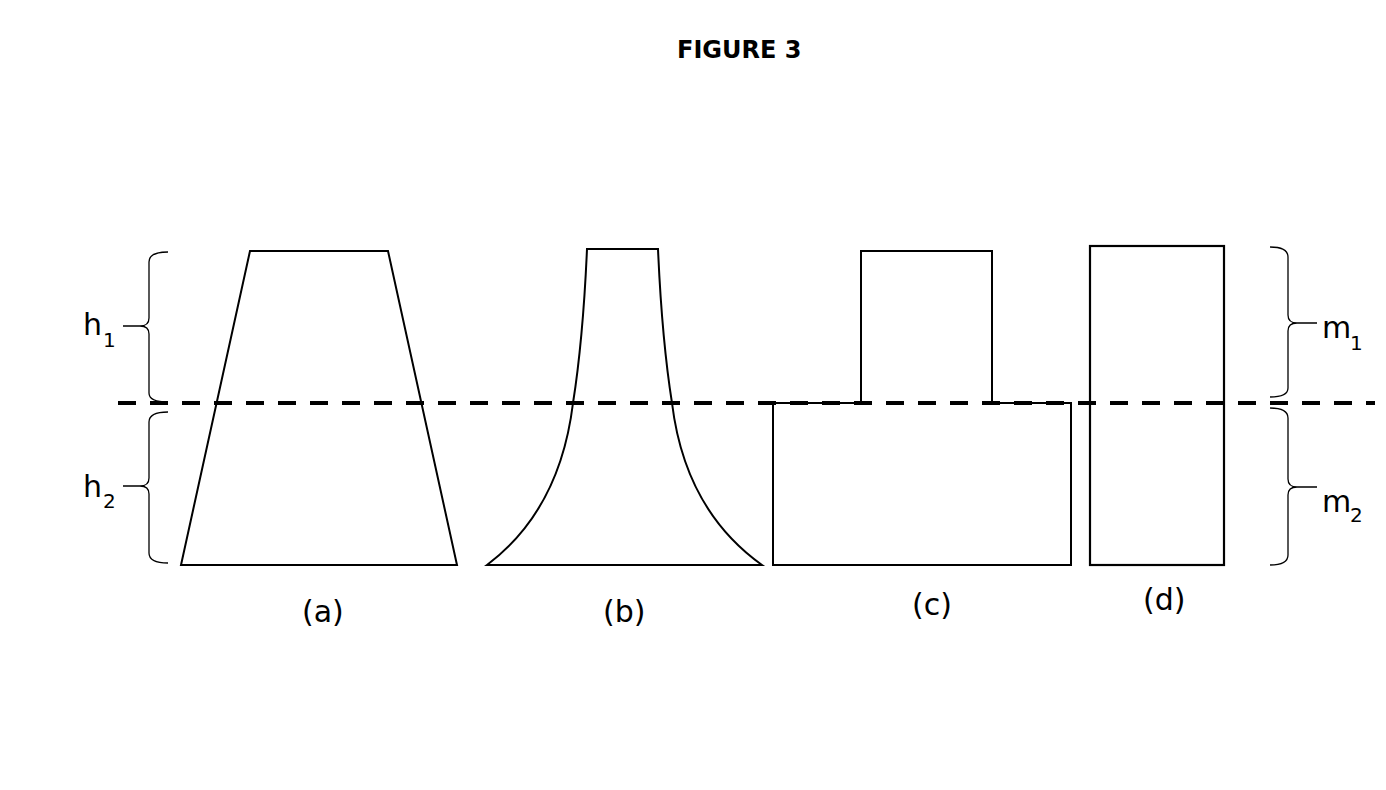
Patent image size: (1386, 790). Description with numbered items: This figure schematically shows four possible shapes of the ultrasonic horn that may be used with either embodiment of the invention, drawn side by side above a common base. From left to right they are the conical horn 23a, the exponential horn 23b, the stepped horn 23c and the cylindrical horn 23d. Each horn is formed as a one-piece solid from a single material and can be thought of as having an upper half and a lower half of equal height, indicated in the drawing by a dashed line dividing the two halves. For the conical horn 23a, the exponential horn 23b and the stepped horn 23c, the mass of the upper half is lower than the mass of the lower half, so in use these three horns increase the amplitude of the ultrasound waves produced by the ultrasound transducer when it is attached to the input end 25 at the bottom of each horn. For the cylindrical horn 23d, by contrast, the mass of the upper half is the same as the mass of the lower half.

The conical horn 23a is at (242, 283).
The exponential horn 23b is at (587, 275).
The stepped horn 23c is at (860, 275).
The cylindrical horn 23d is at (1087, 272).
The input end 25 is at (245, 566).